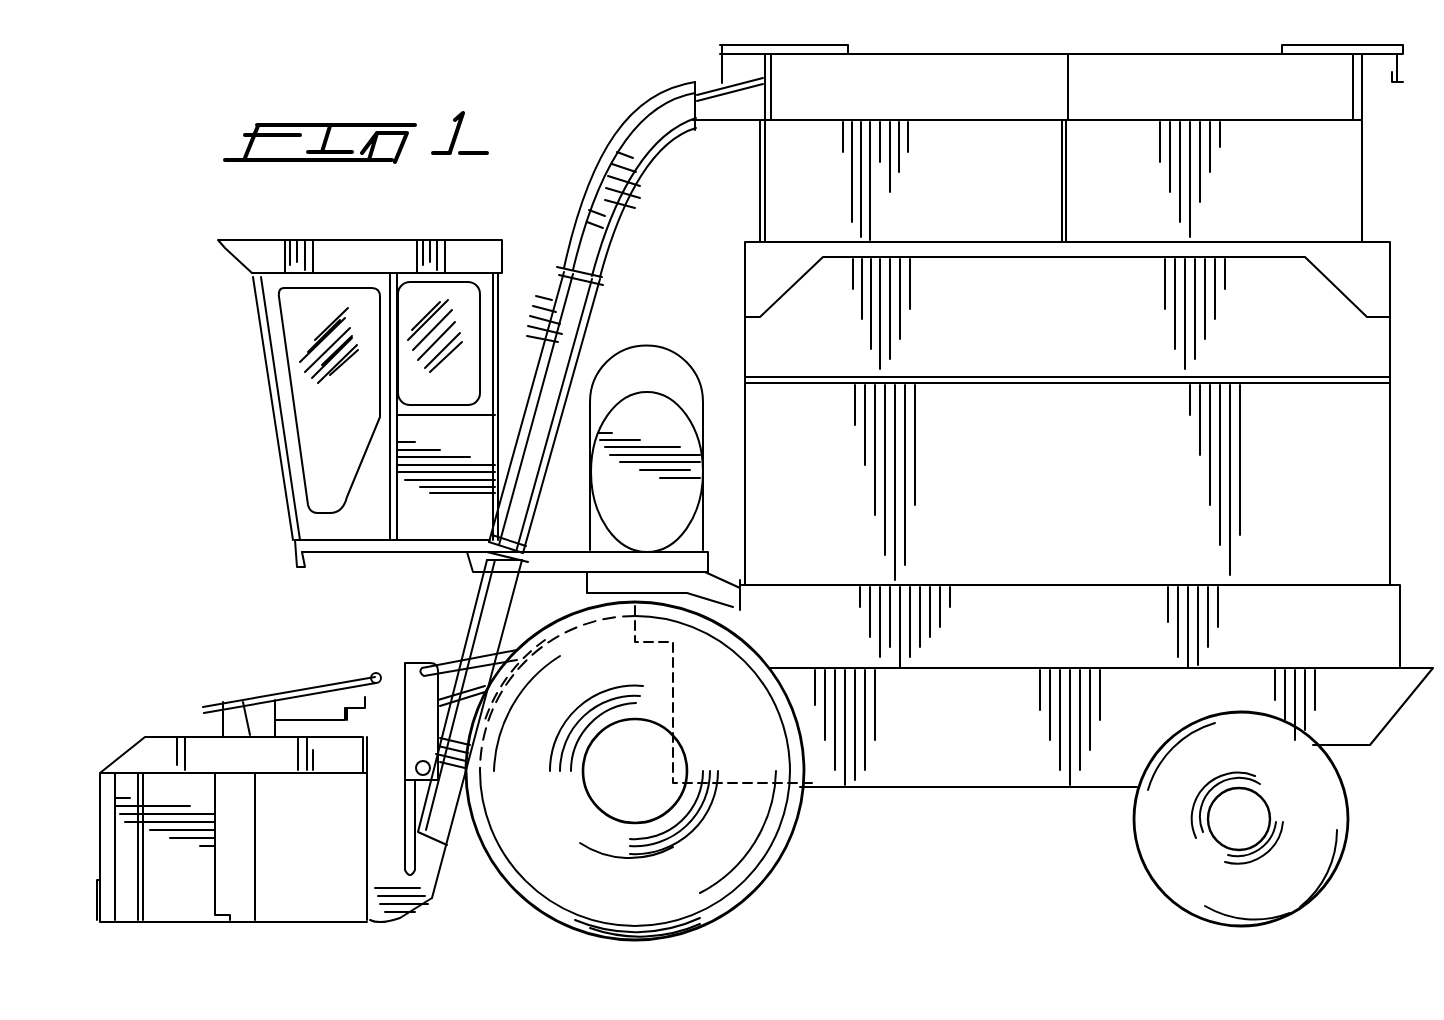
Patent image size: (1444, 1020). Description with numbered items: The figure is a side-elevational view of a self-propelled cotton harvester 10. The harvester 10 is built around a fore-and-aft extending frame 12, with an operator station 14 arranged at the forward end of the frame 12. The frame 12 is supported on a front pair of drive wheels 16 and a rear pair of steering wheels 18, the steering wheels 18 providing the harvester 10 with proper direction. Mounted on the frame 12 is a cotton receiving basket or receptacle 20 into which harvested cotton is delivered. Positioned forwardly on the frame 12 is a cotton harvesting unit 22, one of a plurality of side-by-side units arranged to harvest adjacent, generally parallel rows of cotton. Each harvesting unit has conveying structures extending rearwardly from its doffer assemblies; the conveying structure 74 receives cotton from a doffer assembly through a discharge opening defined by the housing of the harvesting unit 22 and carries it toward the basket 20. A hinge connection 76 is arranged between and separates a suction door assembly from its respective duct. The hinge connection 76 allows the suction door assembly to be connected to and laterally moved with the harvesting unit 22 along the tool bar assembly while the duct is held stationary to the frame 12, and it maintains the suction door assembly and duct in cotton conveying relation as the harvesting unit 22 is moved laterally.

The cotton harvester 10 is at (222, 561).
The frame 12 is at (977, 770).
The operator station 14 is at (270, 388).
The drive wheels 16 is at (648, 898).
The steering wheels 18 is at (1253, 898).
The cotton receiving basket 20 is at (972, 191).
The cotton harvesting unit 22 is at (168, 732).
The second conveying structure 74 is at (445, 882).
The hinge connection 76 is at (515, 562).